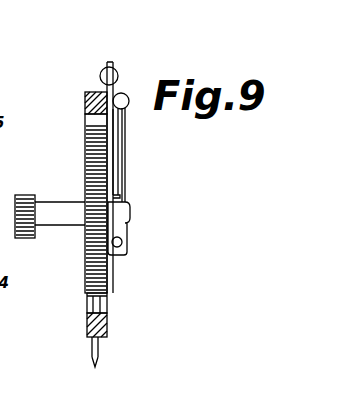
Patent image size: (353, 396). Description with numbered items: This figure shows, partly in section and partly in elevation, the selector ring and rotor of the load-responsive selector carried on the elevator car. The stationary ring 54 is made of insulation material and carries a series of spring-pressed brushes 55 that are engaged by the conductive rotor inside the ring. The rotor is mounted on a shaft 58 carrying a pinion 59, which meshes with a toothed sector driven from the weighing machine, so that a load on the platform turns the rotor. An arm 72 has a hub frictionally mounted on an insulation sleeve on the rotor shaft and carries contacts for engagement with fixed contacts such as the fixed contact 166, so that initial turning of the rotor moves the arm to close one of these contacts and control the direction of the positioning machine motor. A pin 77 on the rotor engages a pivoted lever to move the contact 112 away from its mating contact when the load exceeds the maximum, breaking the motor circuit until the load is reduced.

The contact 112 is at (101, 73).
The pin 77 is at (110, 65).
The fixed contact 166 is at (128, 103).
The arm 72 is at (125, 140).
The pinion 59 is at (20, 194).
The shaft 58 is at (67, 220).
The spring-pressed brushes 55 is at (107, 302).
The stationary ring 54 is at (107, 320).